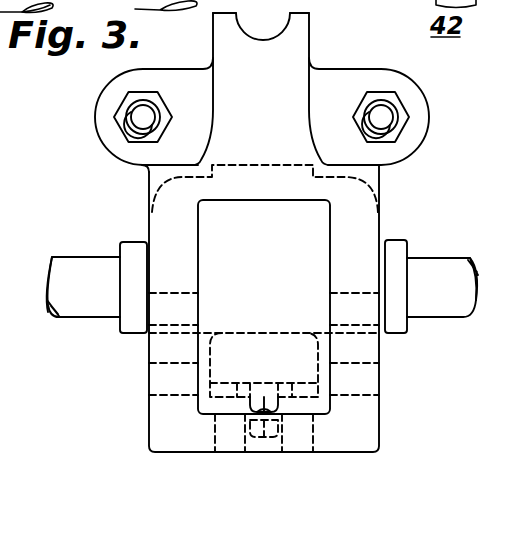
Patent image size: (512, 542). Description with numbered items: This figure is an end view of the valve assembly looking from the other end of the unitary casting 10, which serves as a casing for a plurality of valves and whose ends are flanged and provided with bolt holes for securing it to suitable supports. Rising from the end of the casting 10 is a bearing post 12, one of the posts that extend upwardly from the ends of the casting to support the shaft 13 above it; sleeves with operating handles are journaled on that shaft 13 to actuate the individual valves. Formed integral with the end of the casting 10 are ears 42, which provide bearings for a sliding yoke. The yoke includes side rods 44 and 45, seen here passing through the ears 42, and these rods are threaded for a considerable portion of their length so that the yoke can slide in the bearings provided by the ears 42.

The unitary casting 10 is at (149, 192).
The bearing post 12 is at (223, 30).
The shaft 13 is at (271, 28).
The ears 42 is at (113, 84).
The side rod 44 is at (385, 117).
The side rod 45 is at (143, 117).